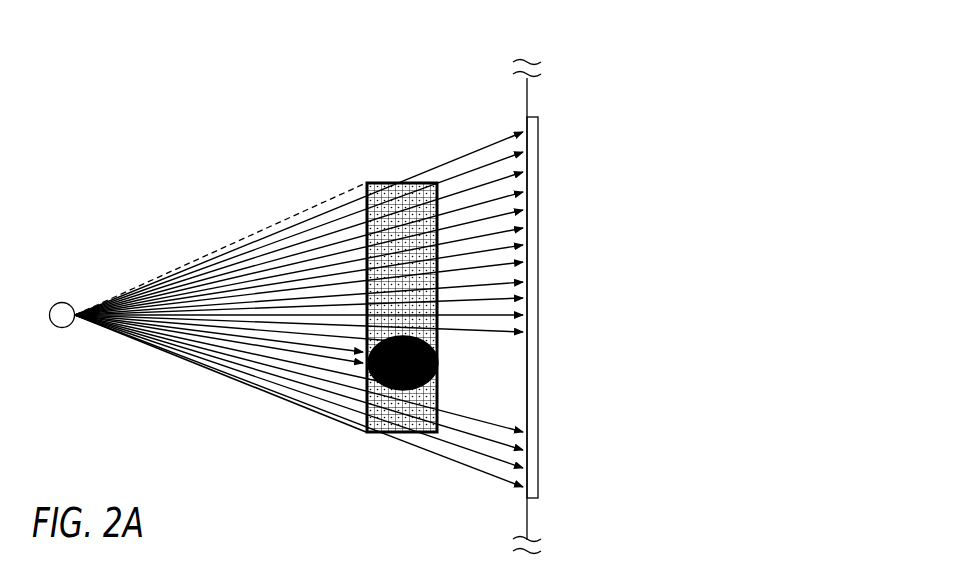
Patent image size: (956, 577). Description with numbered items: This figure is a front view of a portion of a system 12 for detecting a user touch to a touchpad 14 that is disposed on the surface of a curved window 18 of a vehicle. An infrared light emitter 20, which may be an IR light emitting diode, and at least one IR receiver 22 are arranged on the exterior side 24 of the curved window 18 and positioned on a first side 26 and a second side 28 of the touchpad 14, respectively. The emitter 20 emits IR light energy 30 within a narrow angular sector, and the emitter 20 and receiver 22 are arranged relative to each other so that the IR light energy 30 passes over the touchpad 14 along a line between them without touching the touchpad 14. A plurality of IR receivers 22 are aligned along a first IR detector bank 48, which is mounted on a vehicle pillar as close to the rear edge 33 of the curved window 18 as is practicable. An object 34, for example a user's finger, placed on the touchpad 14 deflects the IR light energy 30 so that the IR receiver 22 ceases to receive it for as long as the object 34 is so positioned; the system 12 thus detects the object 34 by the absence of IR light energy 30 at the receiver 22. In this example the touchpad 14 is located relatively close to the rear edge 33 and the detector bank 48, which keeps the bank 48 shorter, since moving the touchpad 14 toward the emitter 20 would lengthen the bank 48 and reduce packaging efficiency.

The system 12 is at (270, 155).
The touchpad 14 is at (378, 183).
The curved window 18 is at (527, 90).
The infrared light emitter 20 is at (60, 328).
The IR receiver 22 is at (545, 287).
The exterior side 24 is at (398, 110).
The first side 26 is at (365, 424).
The second side 28 is at (442, 197).
The IR light energy 30 is at (223, 378).
The rear edge 33 is at (527, 110).
The object 34 is at (437, 360).
The first IR detector bank 48 is at (538, 117).